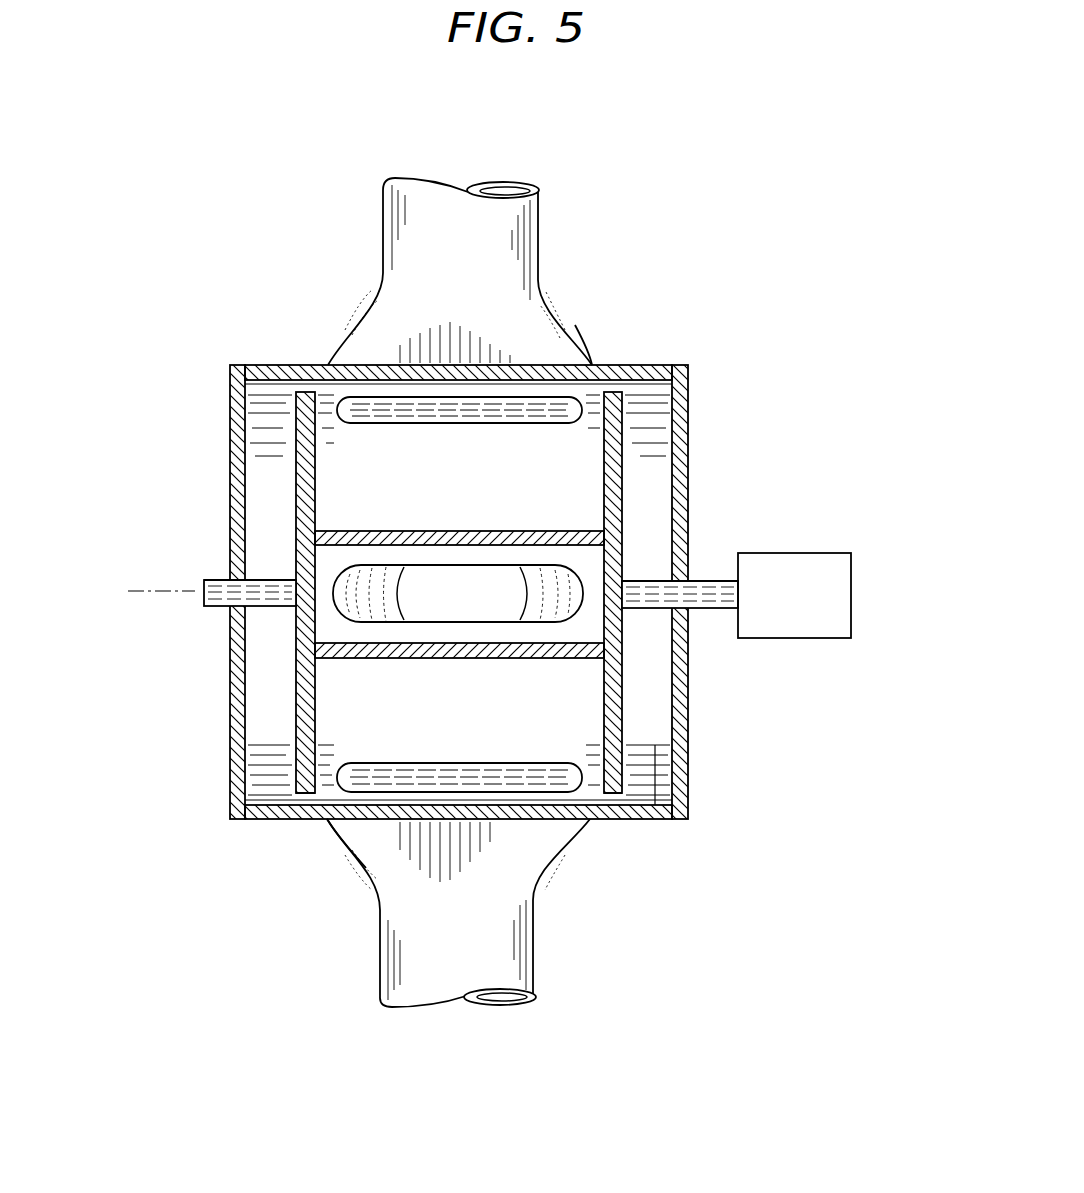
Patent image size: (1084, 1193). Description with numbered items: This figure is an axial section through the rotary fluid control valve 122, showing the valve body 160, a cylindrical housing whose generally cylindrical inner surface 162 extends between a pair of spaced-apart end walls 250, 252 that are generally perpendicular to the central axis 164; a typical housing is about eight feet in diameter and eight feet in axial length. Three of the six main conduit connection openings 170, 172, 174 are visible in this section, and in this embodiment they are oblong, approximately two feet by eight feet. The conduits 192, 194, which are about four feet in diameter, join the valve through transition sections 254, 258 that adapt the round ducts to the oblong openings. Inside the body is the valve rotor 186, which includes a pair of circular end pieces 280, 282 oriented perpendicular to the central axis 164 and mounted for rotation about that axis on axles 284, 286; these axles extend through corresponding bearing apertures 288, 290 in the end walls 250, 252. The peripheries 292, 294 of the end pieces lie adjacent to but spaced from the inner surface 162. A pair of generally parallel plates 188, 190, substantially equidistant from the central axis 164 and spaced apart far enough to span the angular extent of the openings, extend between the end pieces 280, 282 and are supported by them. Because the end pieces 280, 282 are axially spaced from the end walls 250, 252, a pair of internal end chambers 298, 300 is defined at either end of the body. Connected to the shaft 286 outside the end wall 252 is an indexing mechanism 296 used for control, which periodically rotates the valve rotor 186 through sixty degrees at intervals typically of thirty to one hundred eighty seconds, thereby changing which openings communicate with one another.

The rotary fluid control valve 122 is at (508, 592).
The valve body 160 is at (283, 365).
The inner surface 162 is at (256, 800).
The central axis 164 is at (150, 590).
The main conduit connection opening 170 is at (458, 424).
The main conduit connection opening 172 is at (418, 568).
The main conduit connection opening 174 is at (425, 764).
The valve rotor 186 is at (660, 486).
The parallel plate 188 is at (418, 531).
The parallel plate 190 is at (430, 658).
The conduit 192 is at (534, 948).
The conduit 194 is at (540, 236).
The end wall 250 is at (230, 430).
The end wall 252 is at (688, 765).
The transition section 254 is at (574, 327).
The transition section 258 is at (352, 870).
The circular end piece 280 is at (296, 470).
The circular end piece 282 is at (622, 436).
The axle 284 is at (217, 600).
The axle 286 is at (710, 610).
The bearing aperture 288 is at (221, 582).
The bearing aperture 290 is at (690, 587).
The periphery 292 is at (304, 795).
The periphery 294 is at (612, 795).
The indexing mechanism 296 is at (851, 595).
The internal end chamber 298 is at (261, 710).
The internal end chamber 300 is at (655, 805).